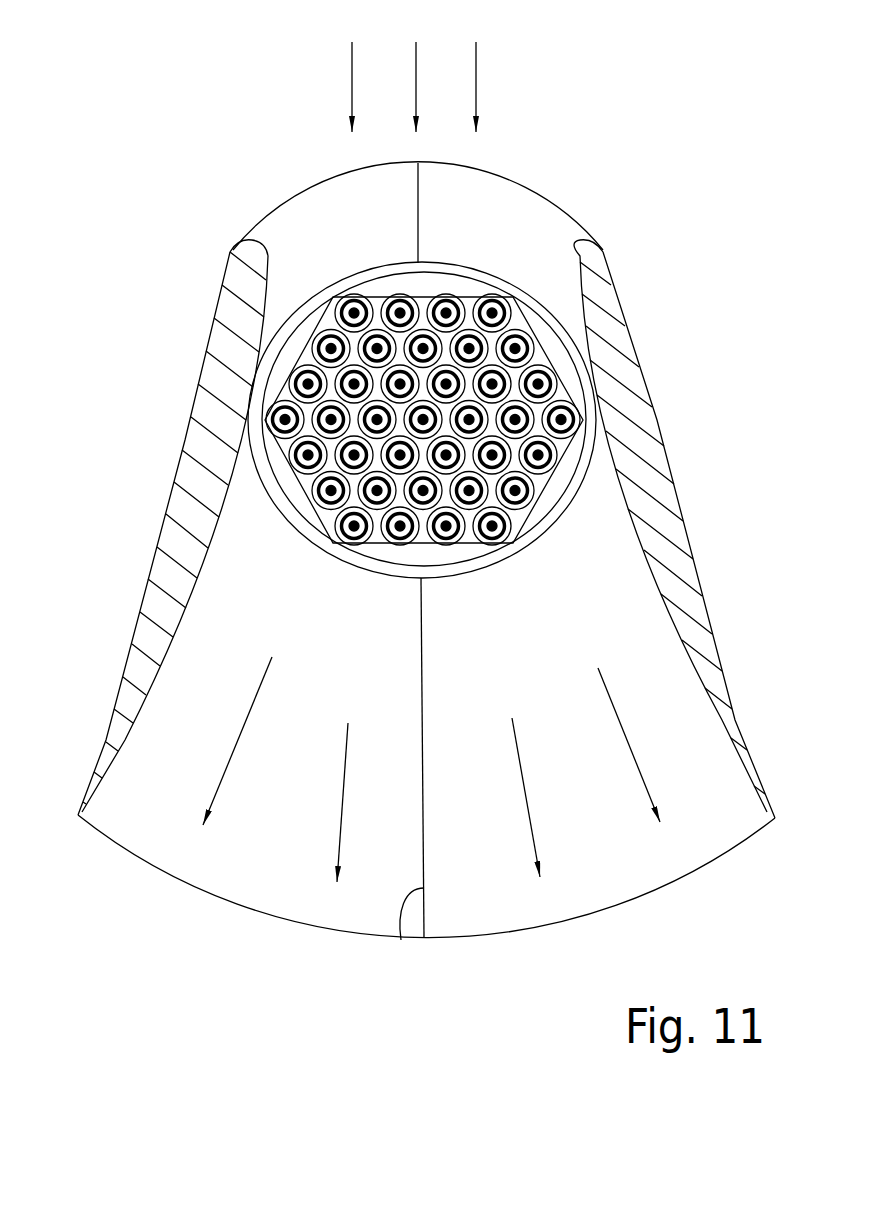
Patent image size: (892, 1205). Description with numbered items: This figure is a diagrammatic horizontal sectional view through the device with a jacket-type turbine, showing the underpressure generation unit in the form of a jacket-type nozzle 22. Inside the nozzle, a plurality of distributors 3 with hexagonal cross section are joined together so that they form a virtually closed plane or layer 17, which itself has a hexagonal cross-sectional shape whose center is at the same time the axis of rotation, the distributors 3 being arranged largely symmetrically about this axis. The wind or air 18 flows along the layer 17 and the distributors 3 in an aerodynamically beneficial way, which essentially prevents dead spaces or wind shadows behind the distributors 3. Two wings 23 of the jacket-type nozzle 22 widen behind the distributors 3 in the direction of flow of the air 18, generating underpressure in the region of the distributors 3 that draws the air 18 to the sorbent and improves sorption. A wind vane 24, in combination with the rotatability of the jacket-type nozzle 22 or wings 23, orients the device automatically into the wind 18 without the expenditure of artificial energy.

The distributor 3 is at (407, 297).
The layer 17 is at (318, 498).
The air 18 is at (352, 80).
The jacket-type nozzle 22 is at (654, 272).
The wing 23 is at (192, 406).
The wind vane 24 is at (402, 940).